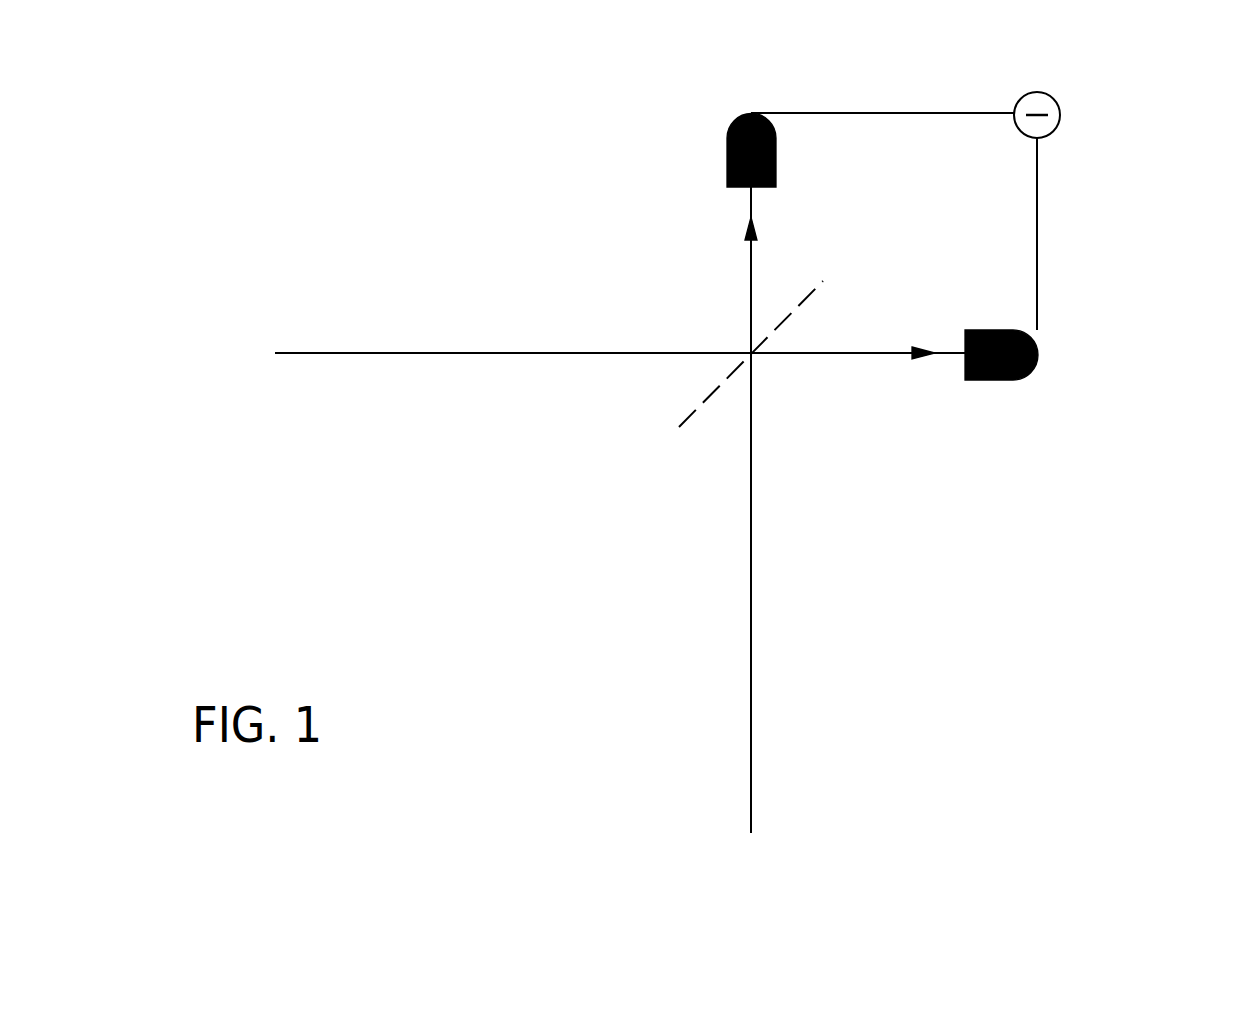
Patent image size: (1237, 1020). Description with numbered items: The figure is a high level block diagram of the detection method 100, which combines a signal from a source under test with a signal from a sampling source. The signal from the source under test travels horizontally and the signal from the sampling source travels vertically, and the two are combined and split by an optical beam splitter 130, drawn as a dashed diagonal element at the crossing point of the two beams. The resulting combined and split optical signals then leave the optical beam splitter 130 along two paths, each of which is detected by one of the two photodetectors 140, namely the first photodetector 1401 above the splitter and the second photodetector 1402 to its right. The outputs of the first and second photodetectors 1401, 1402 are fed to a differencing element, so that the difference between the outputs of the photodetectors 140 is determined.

The detection method 100 is at (1213, 664).
The optical beam splitter 130 is at (713, 392).
The photodetectors 140 is at (925, 270).
The first photodetector 1401 is at (755, 113).
The second photodetector 1402 is at (1033, 370).